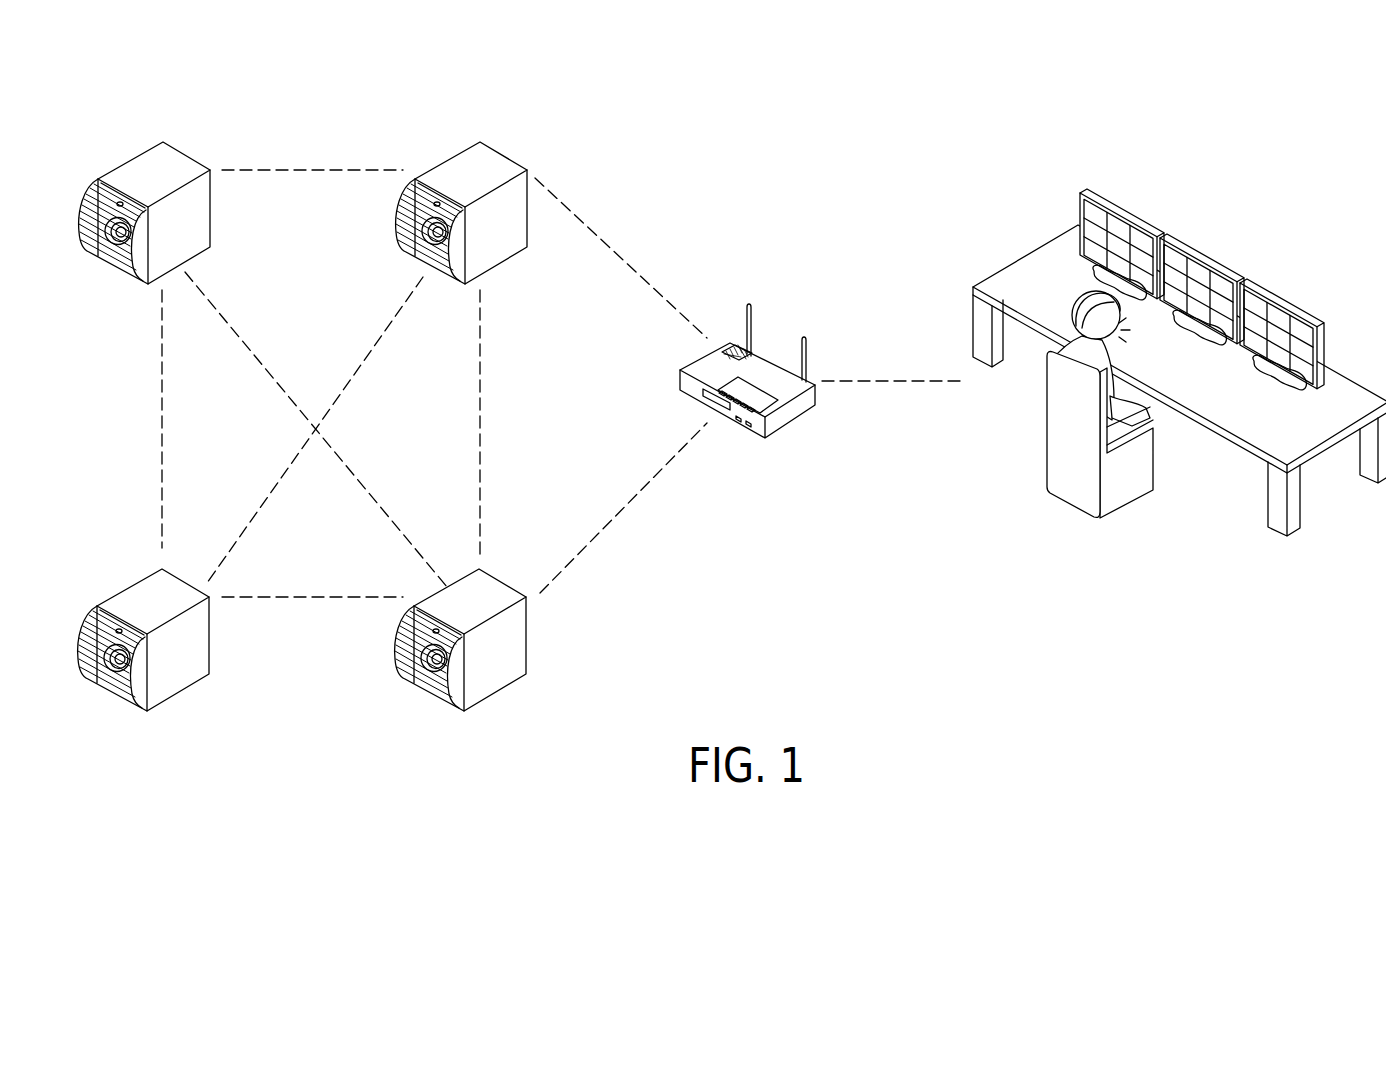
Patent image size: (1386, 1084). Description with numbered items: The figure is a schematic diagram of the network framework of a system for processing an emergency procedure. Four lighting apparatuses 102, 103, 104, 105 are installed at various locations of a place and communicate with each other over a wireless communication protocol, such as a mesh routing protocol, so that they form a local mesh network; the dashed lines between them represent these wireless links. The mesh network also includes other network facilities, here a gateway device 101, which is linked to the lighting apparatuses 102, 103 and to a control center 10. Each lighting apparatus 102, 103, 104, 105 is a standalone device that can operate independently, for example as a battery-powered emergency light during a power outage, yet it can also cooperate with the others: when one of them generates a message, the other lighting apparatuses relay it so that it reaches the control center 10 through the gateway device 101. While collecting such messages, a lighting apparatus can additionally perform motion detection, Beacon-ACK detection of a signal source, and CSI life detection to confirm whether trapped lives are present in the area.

The control center 10 is at (1210, 258).
The gateway device 101 is at (792, 423).
The lighting apparatus 102 is at (497, 160).
The lighting apparatus 103 is at (497, 587).
The lighting apparatus 104 is at (177, 162).
The lighting apparatus 105 is at (232, 651).